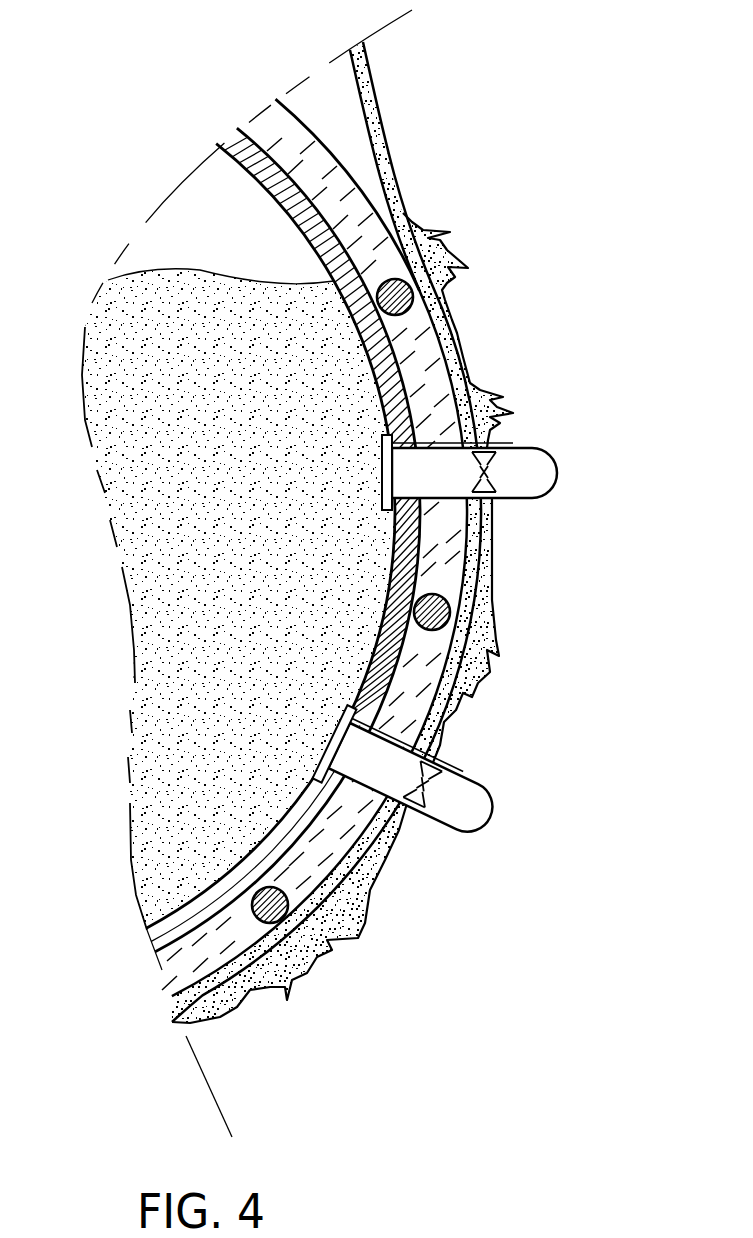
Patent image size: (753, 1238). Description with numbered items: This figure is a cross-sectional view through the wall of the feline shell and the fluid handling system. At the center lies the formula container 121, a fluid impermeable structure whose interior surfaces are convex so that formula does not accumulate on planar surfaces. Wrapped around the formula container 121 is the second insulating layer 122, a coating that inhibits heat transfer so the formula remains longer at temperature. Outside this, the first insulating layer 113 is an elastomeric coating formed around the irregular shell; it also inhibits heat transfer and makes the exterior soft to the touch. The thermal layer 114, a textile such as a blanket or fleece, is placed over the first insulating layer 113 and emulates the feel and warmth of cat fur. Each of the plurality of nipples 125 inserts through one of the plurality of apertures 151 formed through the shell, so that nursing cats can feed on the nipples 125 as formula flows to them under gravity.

The first insulating layer 113 is at (357, 203).
The thermal layer 114 is at (447, 328).
The formula container 121 is at (175, 243).
The second insulating layer 122 is at (223, 140).
The plurality of nipples 125 is at (557, 473).
The plurality of apertures 151 is at (490, 444).